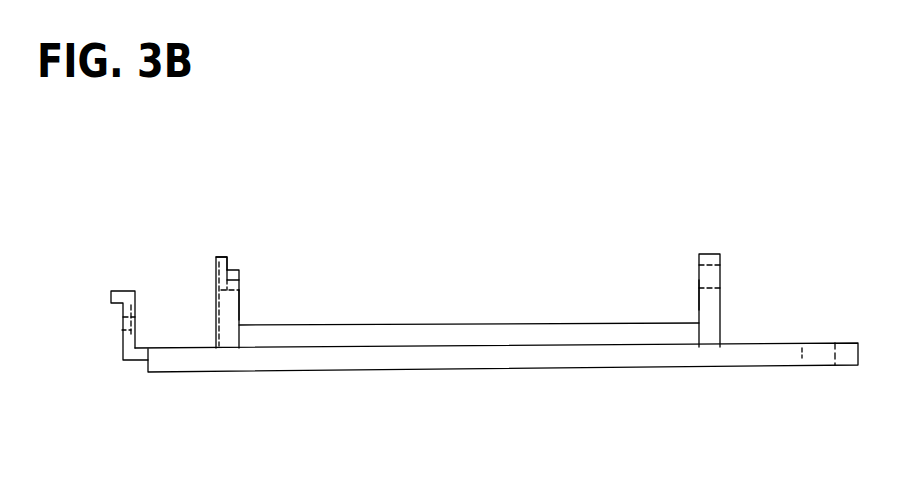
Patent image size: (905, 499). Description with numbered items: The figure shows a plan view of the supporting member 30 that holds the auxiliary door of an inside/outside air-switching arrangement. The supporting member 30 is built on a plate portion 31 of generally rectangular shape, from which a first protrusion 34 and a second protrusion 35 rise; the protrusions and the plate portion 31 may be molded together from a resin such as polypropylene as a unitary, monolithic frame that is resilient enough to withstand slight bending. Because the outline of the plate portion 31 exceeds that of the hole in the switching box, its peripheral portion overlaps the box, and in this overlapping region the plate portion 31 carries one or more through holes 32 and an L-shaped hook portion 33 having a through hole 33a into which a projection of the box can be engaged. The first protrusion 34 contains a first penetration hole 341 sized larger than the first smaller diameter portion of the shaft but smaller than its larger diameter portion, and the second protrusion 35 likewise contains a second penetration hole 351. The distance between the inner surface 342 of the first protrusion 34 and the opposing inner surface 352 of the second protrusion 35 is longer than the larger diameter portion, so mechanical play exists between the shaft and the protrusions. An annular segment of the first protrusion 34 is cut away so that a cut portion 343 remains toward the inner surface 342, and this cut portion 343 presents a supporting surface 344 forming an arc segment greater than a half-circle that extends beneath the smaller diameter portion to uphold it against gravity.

The supporting member 30 is at (774, 178).
The plate portion 31 is at (441, 358).
The through hole 32 is at (806, 350).
The hook portion 33 is at (135, 303).
The through hole 33a is at (122, 330).
The first protrusion 34 is at (223, 308).
The first penetration hole 341 is at (240, 282).
The inner surface 342 is at (239, 302).
The cut portion 343 is at (232, 270).
The supporting surface 344 is at (239, 268).
The second protrusion 35 is at (710, 305).
The second penetration hole 351 is at (707, 270).
The inner surface 352 is at (699, 293).